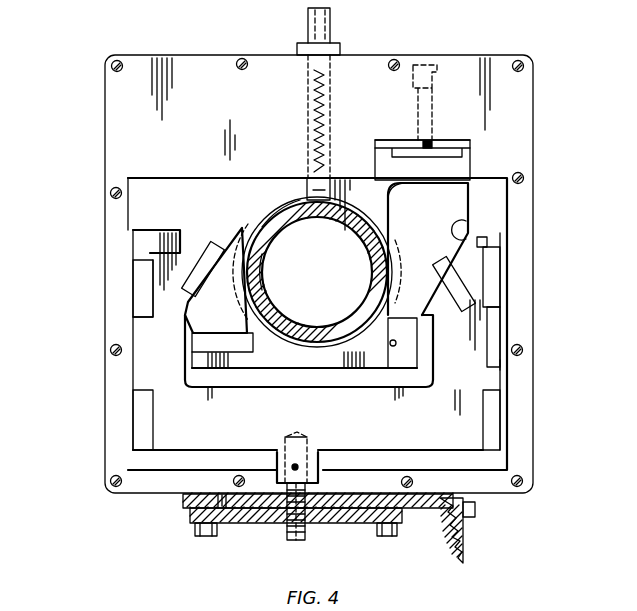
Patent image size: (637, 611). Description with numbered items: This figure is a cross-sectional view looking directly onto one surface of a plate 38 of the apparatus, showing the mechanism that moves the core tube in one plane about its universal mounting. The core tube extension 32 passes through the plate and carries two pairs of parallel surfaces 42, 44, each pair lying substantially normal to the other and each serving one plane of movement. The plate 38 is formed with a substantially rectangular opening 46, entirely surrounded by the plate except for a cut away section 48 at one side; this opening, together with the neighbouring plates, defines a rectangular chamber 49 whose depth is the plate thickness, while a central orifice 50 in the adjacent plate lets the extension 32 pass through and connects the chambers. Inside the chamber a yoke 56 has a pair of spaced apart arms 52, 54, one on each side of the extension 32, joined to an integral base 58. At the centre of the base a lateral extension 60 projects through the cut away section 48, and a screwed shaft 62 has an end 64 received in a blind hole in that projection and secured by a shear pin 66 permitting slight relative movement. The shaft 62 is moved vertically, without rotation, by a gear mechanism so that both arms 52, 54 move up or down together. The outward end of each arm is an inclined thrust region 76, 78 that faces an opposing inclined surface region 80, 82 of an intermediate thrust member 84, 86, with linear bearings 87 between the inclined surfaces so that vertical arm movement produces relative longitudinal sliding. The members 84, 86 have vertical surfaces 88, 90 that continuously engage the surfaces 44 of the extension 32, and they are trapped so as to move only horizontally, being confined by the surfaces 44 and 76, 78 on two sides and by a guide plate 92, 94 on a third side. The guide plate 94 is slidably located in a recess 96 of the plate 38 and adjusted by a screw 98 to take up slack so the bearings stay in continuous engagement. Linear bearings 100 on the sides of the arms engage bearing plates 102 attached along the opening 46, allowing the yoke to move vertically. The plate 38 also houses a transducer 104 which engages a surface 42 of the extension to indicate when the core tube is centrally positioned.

The core tube extension 32 is at (370, 235).
The plate 38 is at (510, 92).
The pair of parallel surfaces 42 is at (262, 221).
The pair of parallel surfaces 44 is at (260, 270).
The rectangular opening 46 is at (128, 178).
The cut away section 48 is at (323, 477).
The rectangular chamber 49 is at (147, 202).
The central orifice 50 is at (282, 200).
The arm 52 is at (153, 240).
The arm 54 is at (468, 313).
The yoke 56 is at (500, 365).
The base 58 is at (430, 445).
The lateral extension 60 is at (285, 450).
The screwed shaft 62 is at (292, 533).
The shaft end 64 is at (310, 437).
The shear pin 66 is at (300, 463).
The inclined thrust region 76 is at (147, 313).
The inclined thrust region 78 is at (482, 243).
The inclined surface region 80 is at (232, 238).
The inclined surface region 82 is at (457, 228).
The intermediate thrust member 84 is at (200, 322).
The intermediate thrust member 86 is at (445, 197).
The linear bearings 87 is at (202, 258).
The vertical surface 88 is at (380, 200).
The vertical surface 90 is at (270, 242).
The guide plate 92 is at (202, 340).
The guide plate 94 is at (457, 162).
The recess 96 is at (385, 140).
The screw 98 is at (443, 68).
The linear bearings 100 is at (143, 277).
The bearing plates 102 is at (132, 297).
The transducer 104 is at (303, 78).